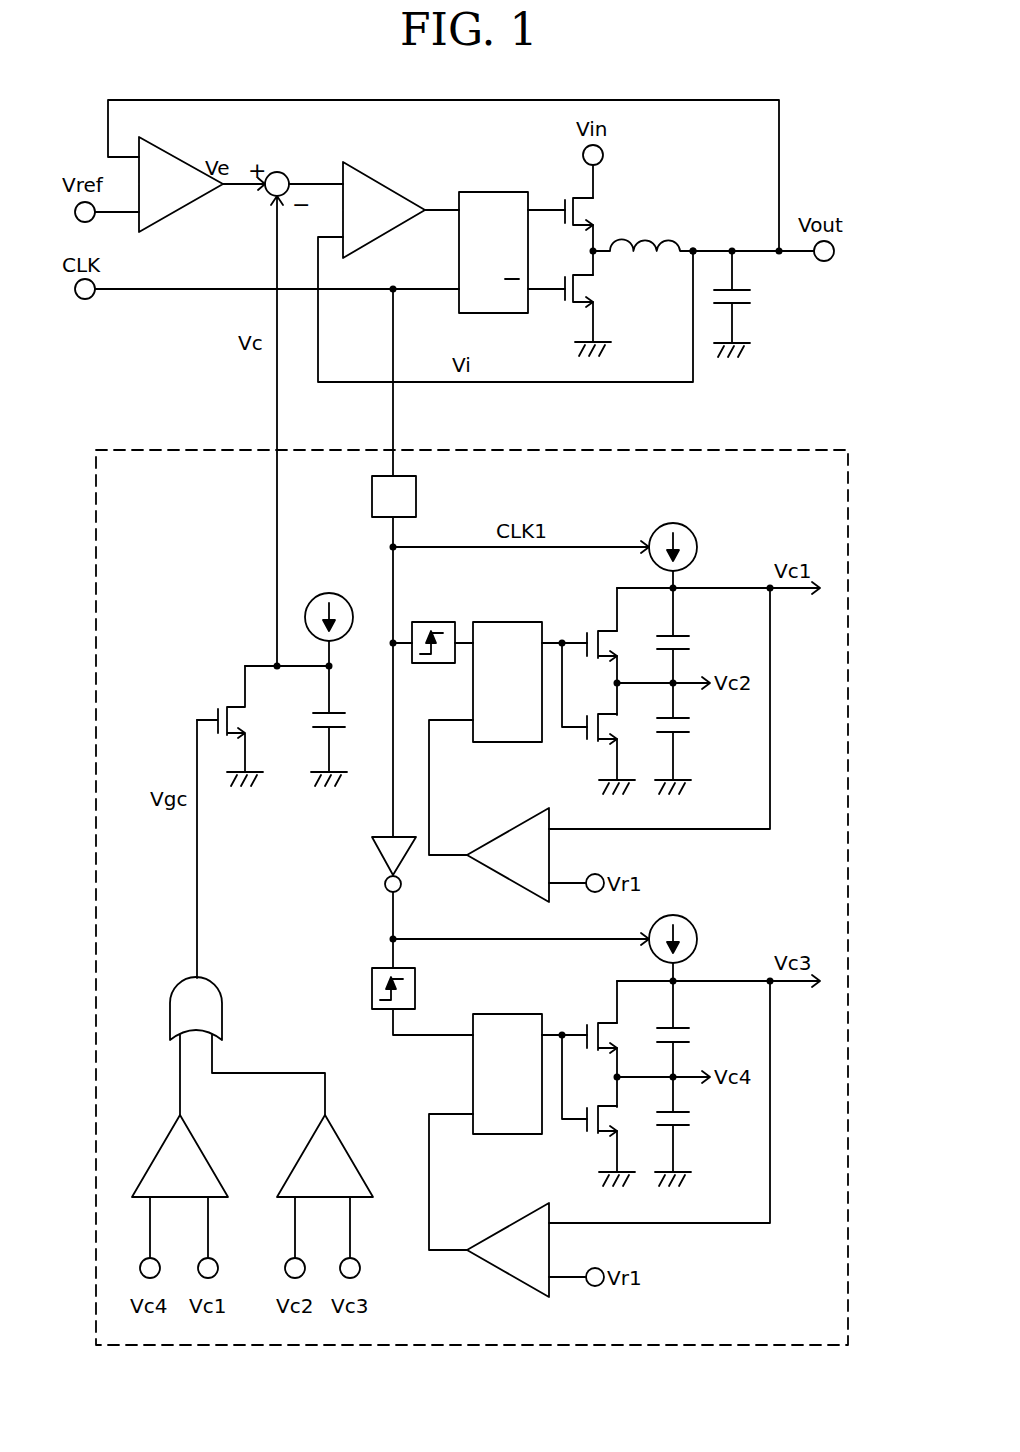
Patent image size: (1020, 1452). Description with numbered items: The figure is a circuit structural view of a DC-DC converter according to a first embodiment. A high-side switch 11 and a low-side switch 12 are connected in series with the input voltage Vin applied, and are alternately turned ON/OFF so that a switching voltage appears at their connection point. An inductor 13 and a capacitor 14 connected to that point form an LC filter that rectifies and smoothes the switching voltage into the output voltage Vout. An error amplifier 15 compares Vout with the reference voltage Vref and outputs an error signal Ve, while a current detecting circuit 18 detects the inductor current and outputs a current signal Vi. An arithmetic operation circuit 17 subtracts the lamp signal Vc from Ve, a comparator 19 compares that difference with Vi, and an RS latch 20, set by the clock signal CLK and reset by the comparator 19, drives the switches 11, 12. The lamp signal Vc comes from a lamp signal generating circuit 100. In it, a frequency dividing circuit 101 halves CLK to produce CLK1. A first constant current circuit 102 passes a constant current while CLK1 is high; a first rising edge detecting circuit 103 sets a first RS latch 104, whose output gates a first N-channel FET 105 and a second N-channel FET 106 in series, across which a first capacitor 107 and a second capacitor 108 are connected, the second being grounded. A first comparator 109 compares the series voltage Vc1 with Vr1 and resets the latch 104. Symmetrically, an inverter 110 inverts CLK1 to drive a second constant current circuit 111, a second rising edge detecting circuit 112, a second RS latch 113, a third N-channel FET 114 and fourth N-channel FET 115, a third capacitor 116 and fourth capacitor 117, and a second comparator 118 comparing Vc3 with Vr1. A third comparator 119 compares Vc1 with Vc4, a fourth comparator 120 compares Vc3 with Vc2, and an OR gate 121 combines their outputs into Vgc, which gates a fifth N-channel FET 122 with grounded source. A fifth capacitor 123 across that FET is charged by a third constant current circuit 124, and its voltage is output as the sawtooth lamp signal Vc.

The high-side switch 11 is at (598, 202).
The low-side switch 12 is at (598, 282).
The inductor 13 is at (660, 237).
The capacitor 14 is at (746, 304).
The error amplifier 15 is at (196, 212).
The arithmetic operation circuit 17 is at (284, 172).
The current detecting circuit 18 is at (700, 247).
The comparator 19 is at (382, 170).
The RS latch 20 is at (490, 192).
The lamp signal generating circuit 100 is at (140, 450).
The frequency dividing circuit 101 is at (418, 497).
The first constant current circuit 102 is at (697, 530).
The first rising edge detecting circuit 103 is at (436, 622).
The first RS latch 104 is at (495, 742).
The first N-channel FET 105 is at (597, 630).
The second N-channel FET 106 is at (585, 738).
The first capacitor 107 is at (684, 634).
The second capacitor 108 is at (684, 735).
The first comparator 109 is at (500, 880).
The inverter 110 is at (372, 858).
The second constant current circuit 111 is at (697, 922).
The second rising edge detecting circuit 112 is at (372, 975).
The second RS latch 113 is at (495, 1134).
The third N-channel FET 114 is at (597, 1022).
The fourth N-channel FET 115 is at (587, 1130).
The third capacitor 116 is at (684, 1026).
The fourth capacitor 117 is at (684, 1128).
The second comparator 118 is at (500, 1278).
The third comparator 119 is at (203, 1150).
The fourth comparator 120 is at (348, 1150).
The OR gate 121 is at (225, 1012).
The fifth N-channel FET 122 is at (237, 708).
The fifth capacitor 123 is at (325, 712).
The third constant current circuit 124 is at (342, 594).